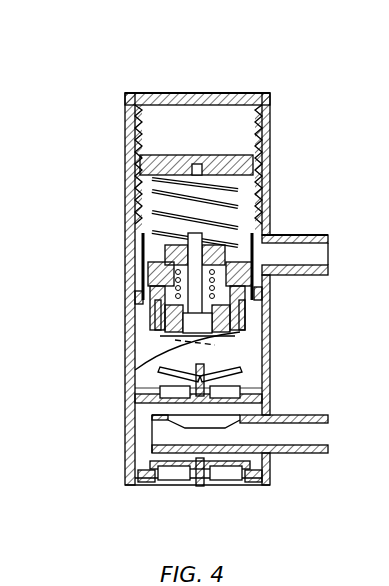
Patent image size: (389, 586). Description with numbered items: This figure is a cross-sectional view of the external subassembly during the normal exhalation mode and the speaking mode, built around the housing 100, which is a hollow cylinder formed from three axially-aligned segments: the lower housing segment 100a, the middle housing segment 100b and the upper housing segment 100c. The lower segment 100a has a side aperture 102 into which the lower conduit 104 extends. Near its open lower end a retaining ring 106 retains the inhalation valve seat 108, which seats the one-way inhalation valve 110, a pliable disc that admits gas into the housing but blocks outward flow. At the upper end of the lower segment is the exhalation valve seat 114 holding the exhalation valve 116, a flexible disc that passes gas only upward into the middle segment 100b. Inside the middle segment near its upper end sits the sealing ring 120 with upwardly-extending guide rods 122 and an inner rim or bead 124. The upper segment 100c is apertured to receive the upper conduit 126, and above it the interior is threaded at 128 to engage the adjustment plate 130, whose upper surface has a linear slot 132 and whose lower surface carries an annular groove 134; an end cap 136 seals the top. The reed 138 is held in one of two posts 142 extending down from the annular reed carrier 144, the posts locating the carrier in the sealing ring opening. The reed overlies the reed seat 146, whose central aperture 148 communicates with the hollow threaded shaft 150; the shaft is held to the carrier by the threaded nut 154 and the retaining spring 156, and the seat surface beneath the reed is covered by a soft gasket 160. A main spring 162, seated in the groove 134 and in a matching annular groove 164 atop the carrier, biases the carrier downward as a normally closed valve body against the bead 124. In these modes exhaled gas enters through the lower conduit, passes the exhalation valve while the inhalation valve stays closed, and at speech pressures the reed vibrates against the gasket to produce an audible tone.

The housing 100 is at (196, 261).
The lower housing segment 100a is at (128, 466).
The middle housing segment 100b is at (128, 386).
The upper housing segment 100c is at (264, 126).
The aperture 102 is at (320, 453).
The lower conduit 104 is at (188, 426).
The retaining ring 106 is at (250, 482).
The inhalation valve seat 108 is at (272, 466).
The inhalation valve 110 is at (176, 470).
The exhalation valve seat 114 is at (268, 396).
The exhalation valve 116 is at (268, 372).
The sealing ring 120 is at (264, 296).
The guide rods 122 is at (255, 255).
The bead 124 is at (135, 288).
The upper conduit 126 is at (300, 233).
The threads 128 is at (130, 125).
The adjustment plate 130 is at (258, 150).
The linear slot 132 is at (196, 160).
The annular groove 134 is at (135, 187).
The end cap 136 is at (133, 92).
The reed 138 is at (135, 368).
The posts 142 is at (135, 335).
The reed carrier 144 is at (135, 278).
The reed seat 146 is at (205, 325).
The central aperture 148 is at (262, 318).
The threaded shaft 150 is at (258, 202).
The threaded nut 154 is at (135, 227).
The retaining spring 156 is at (135, 312).
The gasket 160 is at (245, 335).
The main spring 162 is at (258, 177).
The annular groove 164 is at (140, 253).